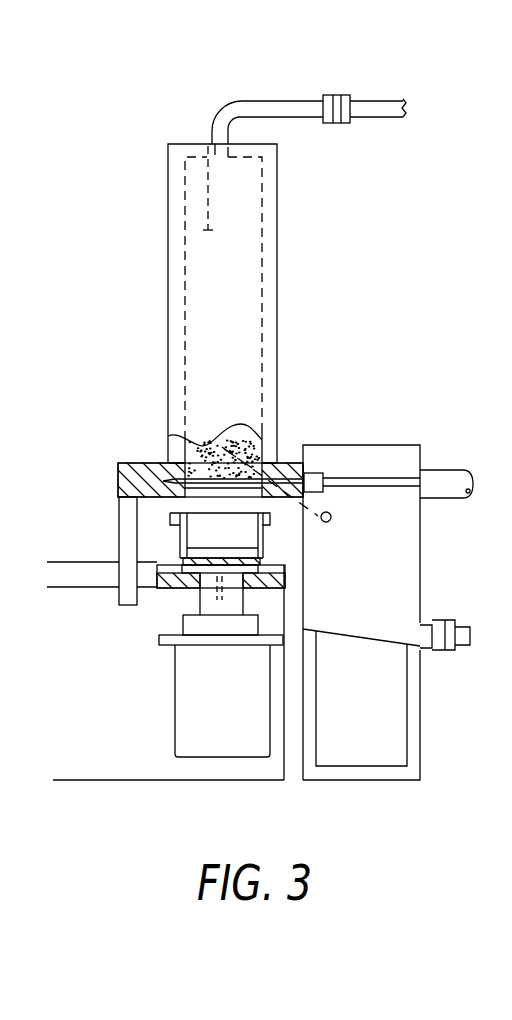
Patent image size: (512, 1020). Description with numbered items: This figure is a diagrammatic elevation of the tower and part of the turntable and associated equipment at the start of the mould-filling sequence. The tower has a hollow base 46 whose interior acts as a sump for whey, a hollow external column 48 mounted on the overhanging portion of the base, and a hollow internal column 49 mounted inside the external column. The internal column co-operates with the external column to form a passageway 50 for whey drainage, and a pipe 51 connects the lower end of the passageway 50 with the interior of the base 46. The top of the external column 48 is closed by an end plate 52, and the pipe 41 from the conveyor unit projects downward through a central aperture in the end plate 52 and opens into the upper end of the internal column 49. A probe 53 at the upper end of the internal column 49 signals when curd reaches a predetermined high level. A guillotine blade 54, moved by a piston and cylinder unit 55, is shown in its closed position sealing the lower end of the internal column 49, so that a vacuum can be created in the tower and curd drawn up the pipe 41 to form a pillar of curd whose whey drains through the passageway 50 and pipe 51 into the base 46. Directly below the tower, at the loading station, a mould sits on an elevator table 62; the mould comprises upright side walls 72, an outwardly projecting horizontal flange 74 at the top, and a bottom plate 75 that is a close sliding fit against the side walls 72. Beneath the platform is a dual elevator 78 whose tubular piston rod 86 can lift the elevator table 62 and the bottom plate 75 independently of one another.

The pipe 41 is at (392, 112).
The hollow base 46 is at (395, 522).
The external column 48 is at (277, 290).
The internal column 49 is at (260, 253).
The passageway 50 is at (265, 213).
The pipe 51 is at (233, 432).
The end plate 52 is at (200, 143).
The probe 53 is at (207, 195).
The guillotine blade 54 is at (187, 482).
The piston and cylinder unit 55 is at (455, 470).
The elevator table 62 is at (197, 602).
The side walls 72 is at (180, 538).
The flange 74 is at (170, 517).
The bottom plate 75 is at (243, 540).
The dual elevator 78 is at (190, 713).
The tubular piston rod 86 is at (177, 627).